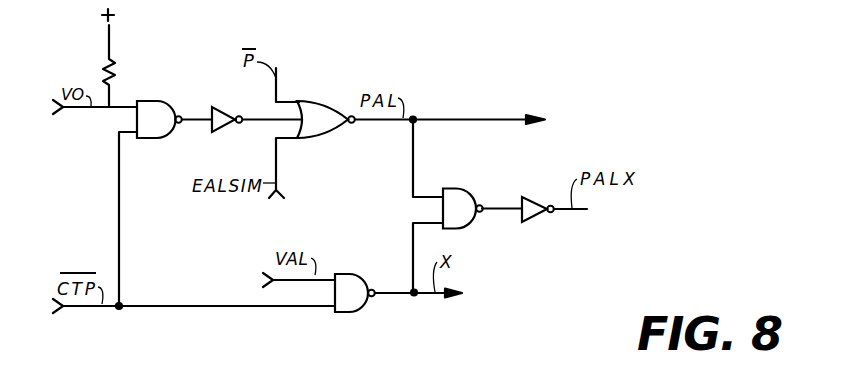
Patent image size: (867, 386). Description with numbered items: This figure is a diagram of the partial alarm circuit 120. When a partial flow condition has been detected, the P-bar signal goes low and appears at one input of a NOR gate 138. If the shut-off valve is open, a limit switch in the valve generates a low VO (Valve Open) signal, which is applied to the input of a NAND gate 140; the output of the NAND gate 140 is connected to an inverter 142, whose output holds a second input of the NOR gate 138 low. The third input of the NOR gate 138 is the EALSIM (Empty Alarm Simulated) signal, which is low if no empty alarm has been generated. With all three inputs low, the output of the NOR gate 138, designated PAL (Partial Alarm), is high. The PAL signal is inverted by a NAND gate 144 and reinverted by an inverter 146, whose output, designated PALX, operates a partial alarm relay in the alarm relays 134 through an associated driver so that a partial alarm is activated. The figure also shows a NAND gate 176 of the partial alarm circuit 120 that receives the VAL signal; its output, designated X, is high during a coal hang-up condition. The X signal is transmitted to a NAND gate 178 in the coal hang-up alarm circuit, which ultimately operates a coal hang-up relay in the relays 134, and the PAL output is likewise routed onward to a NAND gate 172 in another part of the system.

The partial alarm circuit 120 is at (482, 88).
The NOR gate 138 is at (346, 73).
The NAND gate 140 is at (150, 139).
The inverter 142 is at (222, 106).
The NAND gate 144 is at (478, 164).
The inverter 146 is at (538, 222).
The NAND gate 176 is at (340, 313).
The NAND gate (FIG. 10) 172 is at (631, 127).
The NAND gate 178 is at (532, 310).
The alarm relays 134 is at (698, 232).